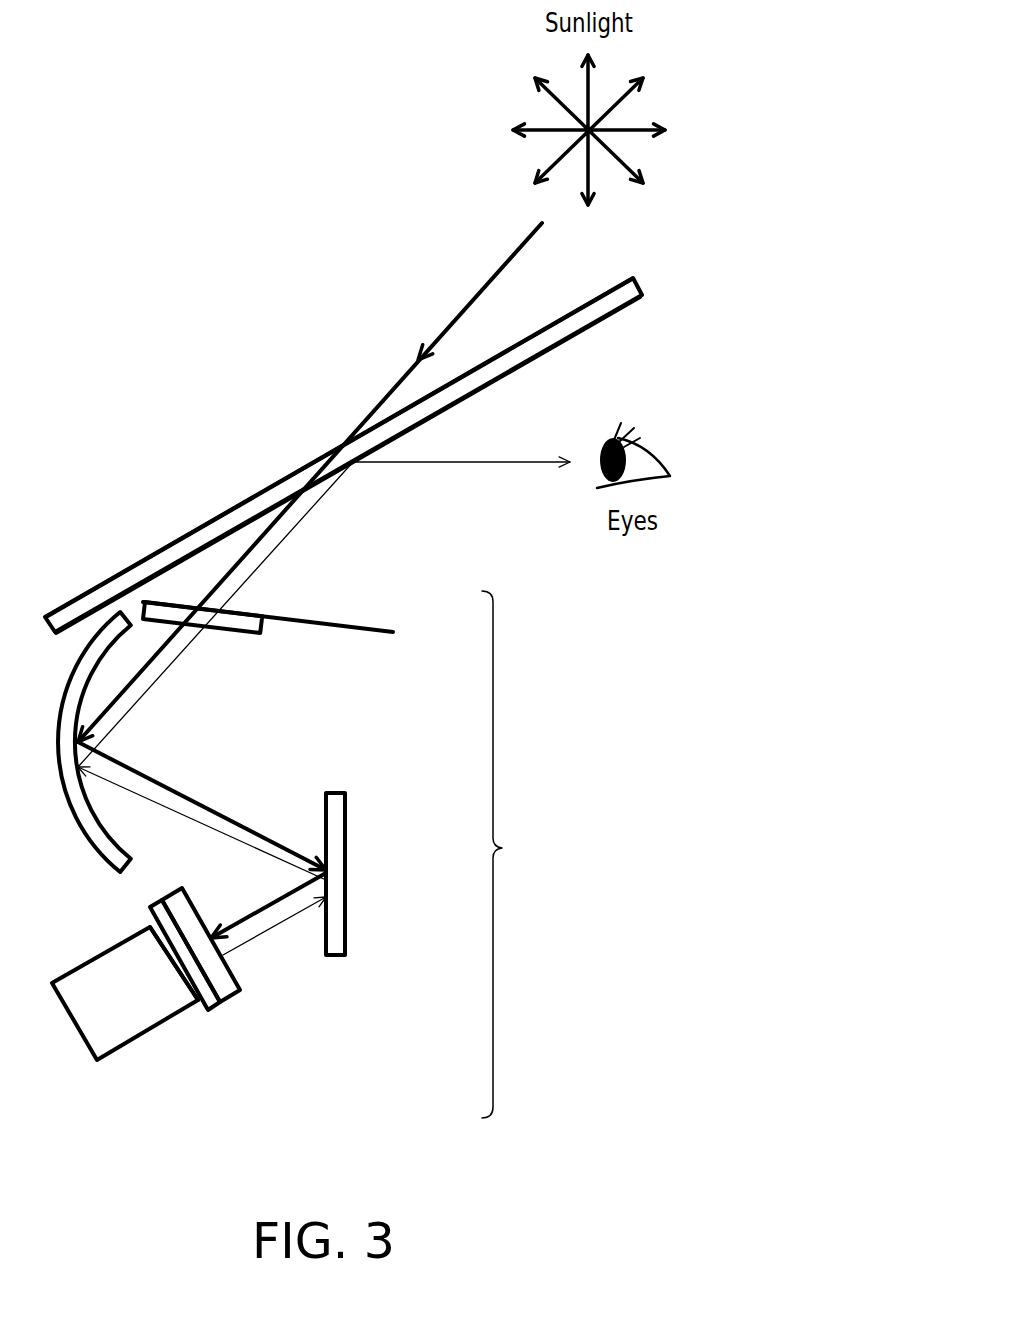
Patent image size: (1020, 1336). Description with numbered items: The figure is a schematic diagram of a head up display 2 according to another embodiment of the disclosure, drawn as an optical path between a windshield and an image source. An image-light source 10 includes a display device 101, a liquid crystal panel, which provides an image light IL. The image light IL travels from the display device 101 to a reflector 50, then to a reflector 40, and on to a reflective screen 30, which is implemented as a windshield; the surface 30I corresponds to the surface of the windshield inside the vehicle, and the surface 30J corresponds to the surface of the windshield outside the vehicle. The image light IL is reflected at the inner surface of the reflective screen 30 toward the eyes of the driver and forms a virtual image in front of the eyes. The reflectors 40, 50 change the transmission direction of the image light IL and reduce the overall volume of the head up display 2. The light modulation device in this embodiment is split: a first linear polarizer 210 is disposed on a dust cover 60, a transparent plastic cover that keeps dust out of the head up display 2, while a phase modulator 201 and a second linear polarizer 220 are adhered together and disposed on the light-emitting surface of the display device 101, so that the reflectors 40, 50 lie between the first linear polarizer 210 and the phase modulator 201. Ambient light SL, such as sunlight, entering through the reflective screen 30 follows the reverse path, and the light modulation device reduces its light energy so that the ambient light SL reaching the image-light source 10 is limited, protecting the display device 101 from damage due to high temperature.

The head up display 2 is at (506, 854).
The image-light source 10 is at (115, 1020).
The display device 101 is at (195, 1000).
The phase modulator 201 is at (232, 988).
The second linear polarizer 220 is at (164, 910).
The first linear polarizer 210 is at (258, 630).
The dust cover 60 is at (372, 628).
The reflector 50 is at (347, 927).
The reflector 40 is at (74, 816).
The reflective screen 30 is at (638, 282).
The surface of the reflective screen 30I is at (568, 340).
The surface of the reflective screen 30J is at (113, 577).
The ambient light SL is at (484, 288).
The image light IL is at (162, 677).